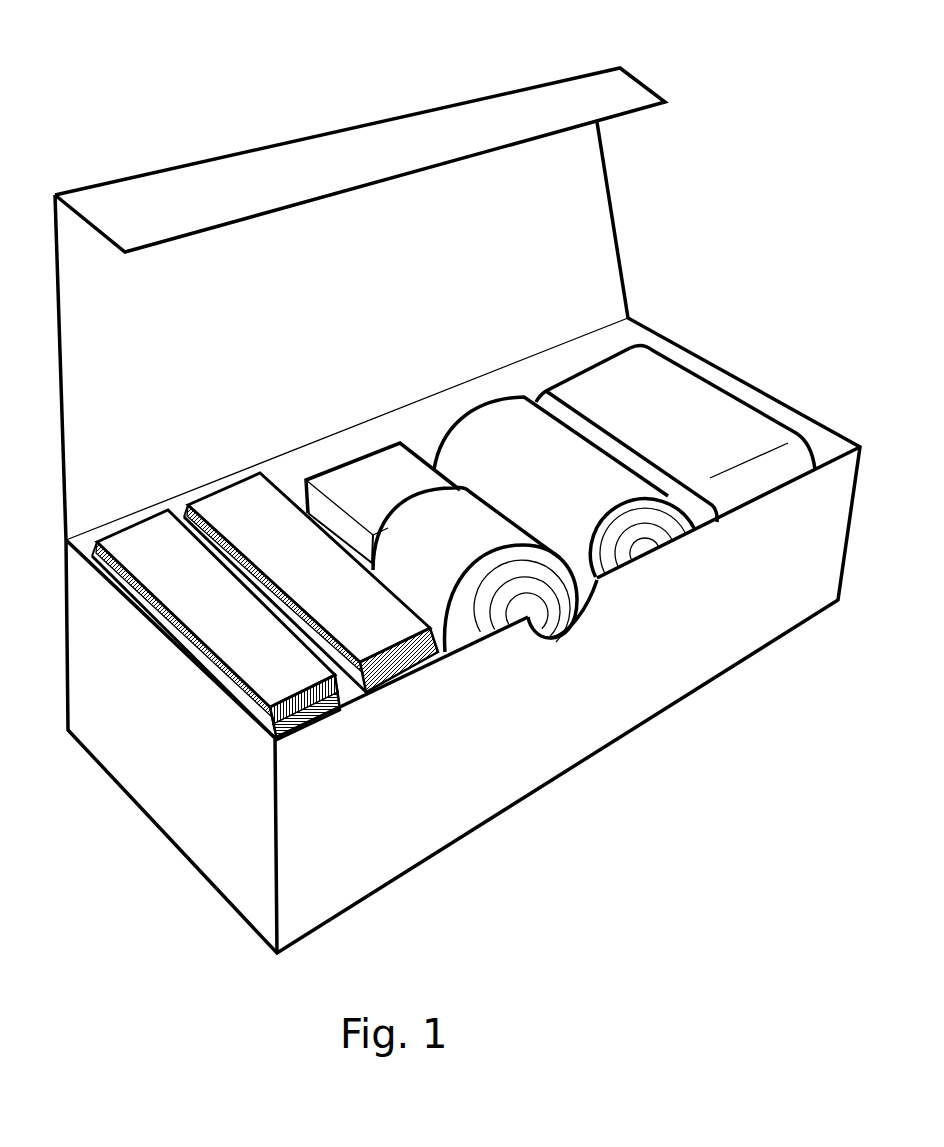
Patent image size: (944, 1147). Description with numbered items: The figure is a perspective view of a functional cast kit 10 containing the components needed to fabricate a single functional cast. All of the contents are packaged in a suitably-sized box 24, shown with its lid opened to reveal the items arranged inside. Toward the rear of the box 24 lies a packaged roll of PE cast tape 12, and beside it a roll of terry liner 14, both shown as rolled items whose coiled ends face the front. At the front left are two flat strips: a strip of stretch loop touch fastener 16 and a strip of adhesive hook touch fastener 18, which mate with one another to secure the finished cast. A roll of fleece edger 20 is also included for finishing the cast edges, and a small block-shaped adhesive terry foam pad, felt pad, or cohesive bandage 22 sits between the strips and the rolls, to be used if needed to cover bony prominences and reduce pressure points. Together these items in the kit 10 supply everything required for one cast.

The functional cast kit 10 is at (296, 97).
The packaged roll of PE cast tape 12 is at (730, 418).
The roll of terry liner 14 is at (577, 498).
The strip of stretch loop touch fastener 16 is at (373, 617).
The strip of adhesive hook touch fastener 18 is at (257, 635).
The roll of fleece edger 20 is at (465, 547).
The adhesive terry foam pad, felt pad, or cohesive bandage 22 is at (370, 495).
The box 24 is at (232, 857).